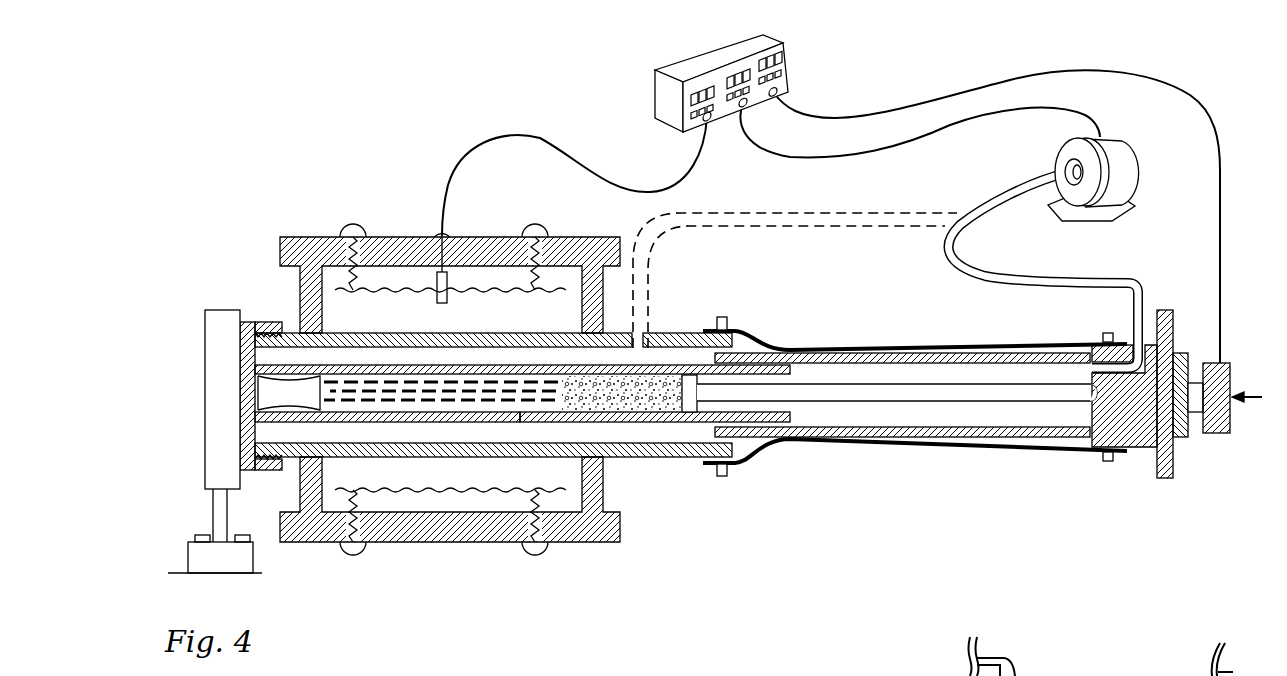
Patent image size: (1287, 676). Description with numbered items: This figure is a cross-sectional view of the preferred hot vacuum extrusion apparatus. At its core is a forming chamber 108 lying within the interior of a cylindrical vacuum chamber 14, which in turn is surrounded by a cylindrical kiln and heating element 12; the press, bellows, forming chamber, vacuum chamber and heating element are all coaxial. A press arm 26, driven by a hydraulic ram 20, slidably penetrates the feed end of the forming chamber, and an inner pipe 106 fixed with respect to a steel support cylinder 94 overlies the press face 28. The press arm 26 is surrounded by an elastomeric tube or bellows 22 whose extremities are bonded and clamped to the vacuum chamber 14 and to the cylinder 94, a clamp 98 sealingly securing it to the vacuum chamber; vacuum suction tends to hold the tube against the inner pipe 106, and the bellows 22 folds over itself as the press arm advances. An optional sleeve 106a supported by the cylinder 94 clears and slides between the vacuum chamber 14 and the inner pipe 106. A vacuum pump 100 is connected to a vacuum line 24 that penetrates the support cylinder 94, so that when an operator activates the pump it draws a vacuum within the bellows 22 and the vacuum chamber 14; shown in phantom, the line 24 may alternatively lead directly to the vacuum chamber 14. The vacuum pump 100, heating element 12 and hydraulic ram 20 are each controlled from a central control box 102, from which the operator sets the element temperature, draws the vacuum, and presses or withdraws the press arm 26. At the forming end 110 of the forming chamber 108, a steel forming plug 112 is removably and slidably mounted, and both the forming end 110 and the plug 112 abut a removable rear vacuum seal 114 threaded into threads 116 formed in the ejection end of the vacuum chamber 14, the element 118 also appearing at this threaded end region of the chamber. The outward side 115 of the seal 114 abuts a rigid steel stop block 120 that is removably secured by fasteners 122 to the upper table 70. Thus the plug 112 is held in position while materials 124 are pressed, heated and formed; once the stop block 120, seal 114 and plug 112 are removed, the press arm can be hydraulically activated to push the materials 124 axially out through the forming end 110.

The heating element 12 is at (350, 290).
The vacuum chamber 14 is at (665, 330).
The hydraulic ram 20 is at (1226, 372).
The bellows 22 is at (768, 448).
The vacuum line 24 is at (1138, 305).
The press arm 26 is at (943, 393).
The press face 28 is at (688, 390).
The upper table 70 is at (260, 573).
The support cylinder 94 is at (1143, 412).
The clamp 98 is at (723, 465).
The vacuum pump 100 is at (1070, 150).
The central control box 102 is at (717, 57).
The inner pipe 106 is at (643, 420).
The sleeve 106a is at (960, 437).
The forming chamber 108 is at (371, 421).
The forming end 110 is at (282, 365).
The forming plug 112 is at (270, 393).
The rear vacuum seal 114 is at (240, 390).
The outward side 115 is at (240, 403).
The threads 116 is at (247, 470).
The upper retainer 118 is at (258, 322).
The stop block 120 is at (218, 442).
The fasteners 122 is at (197, 538).
The materials 124 is at (448, 392).